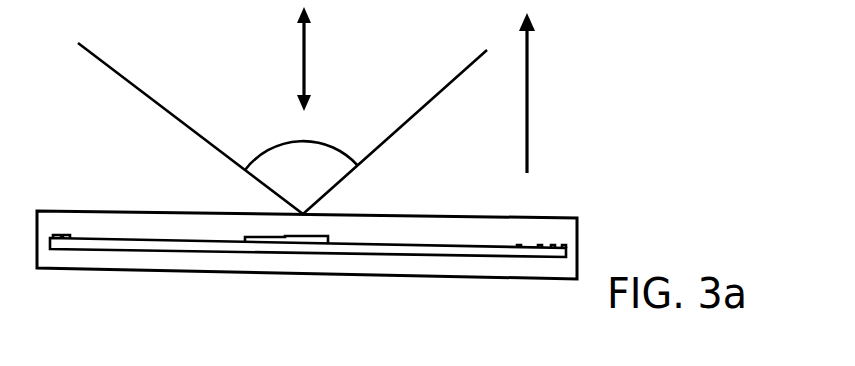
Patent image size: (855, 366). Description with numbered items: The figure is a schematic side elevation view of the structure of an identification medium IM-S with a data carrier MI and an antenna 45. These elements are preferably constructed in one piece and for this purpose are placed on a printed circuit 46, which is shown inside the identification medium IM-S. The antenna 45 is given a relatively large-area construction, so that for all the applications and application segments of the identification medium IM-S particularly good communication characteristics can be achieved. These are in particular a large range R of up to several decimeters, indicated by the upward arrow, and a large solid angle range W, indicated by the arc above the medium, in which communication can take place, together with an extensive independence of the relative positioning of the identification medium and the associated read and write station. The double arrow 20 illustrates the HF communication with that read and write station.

The arrow 20 is at (303, 53).
The solid angle range W is at (336, 152).
The communication range R is at (528, 88).
The identification medium IM-S is at (555, 218).
The antenna 45 is at (76, 238).
The printed circuit 46 is at (135, 240).
The data carrier MI is at (247, 237).